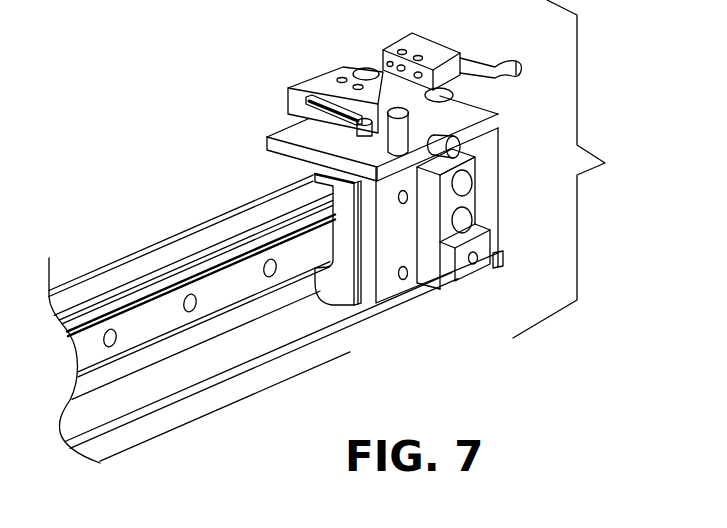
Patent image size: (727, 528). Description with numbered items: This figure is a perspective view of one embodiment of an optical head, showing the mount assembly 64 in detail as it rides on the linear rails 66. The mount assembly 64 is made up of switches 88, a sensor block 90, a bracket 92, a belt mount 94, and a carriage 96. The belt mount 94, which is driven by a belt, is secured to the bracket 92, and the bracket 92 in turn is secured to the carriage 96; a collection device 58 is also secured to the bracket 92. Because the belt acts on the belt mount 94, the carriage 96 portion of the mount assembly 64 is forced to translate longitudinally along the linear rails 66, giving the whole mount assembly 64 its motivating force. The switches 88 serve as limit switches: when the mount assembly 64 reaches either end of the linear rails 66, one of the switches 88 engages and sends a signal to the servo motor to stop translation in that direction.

The collection device 58 is at (460, 150).
The mount assembly 64 is at (578, 169).
The linear rails 66 is at (142, 330).
The switches 88 is at (327, 84).
The sensor block 90 is at (458, 116).
The bracket 92 is at (386, 282).
The belt mount 94 is at (434, 272).
The carriage 96 is at (345, 286).